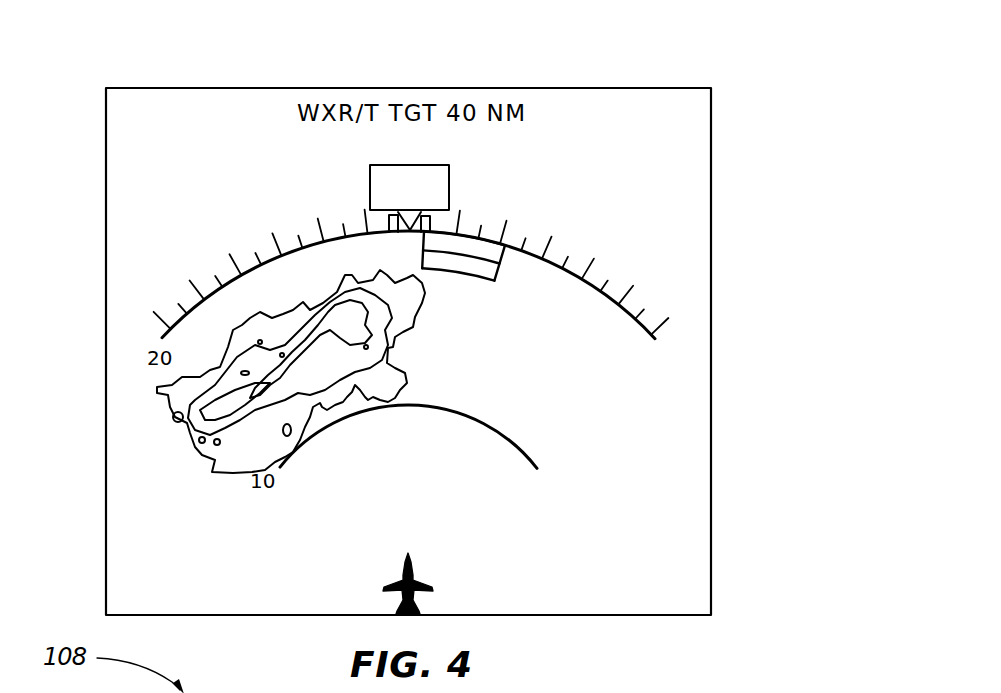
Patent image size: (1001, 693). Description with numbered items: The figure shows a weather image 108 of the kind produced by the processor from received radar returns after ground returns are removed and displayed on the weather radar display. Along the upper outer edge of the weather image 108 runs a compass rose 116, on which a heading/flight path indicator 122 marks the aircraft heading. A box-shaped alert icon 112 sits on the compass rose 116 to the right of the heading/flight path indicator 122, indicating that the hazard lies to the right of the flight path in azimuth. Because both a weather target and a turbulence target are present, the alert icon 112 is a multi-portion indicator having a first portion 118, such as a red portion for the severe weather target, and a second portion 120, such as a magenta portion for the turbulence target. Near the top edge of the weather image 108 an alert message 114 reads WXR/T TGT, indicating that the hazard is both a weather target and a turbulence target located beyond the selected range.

The weather image 108 is at (170, 68).
The compass rose 116 is at (242, 252).
The heading/flight path indicator 122 is at (419, 226).
The first portion 118 is at (611, 223).
The alert icon 112 is at (490, 250).
The alert message 114 is at (458, 253).
The second portion 120 is at (488, 268).